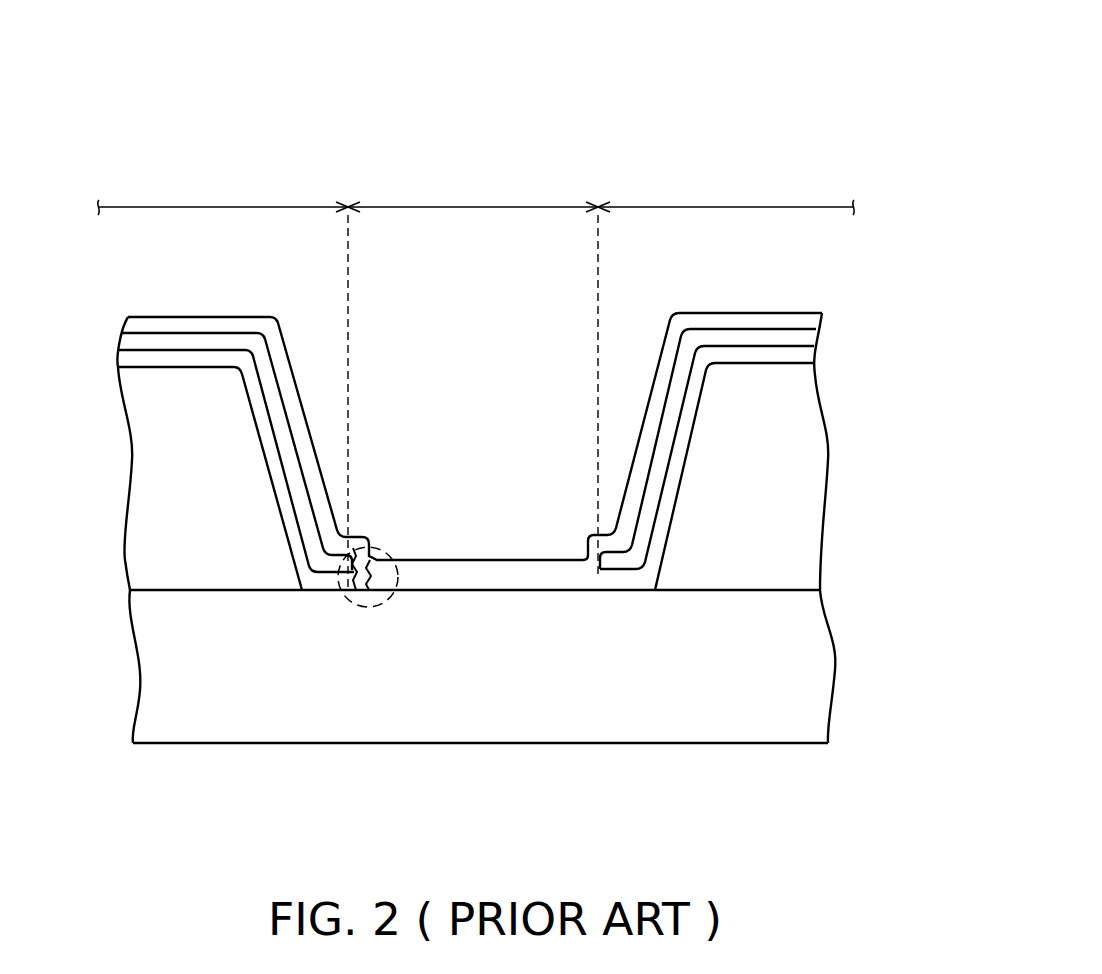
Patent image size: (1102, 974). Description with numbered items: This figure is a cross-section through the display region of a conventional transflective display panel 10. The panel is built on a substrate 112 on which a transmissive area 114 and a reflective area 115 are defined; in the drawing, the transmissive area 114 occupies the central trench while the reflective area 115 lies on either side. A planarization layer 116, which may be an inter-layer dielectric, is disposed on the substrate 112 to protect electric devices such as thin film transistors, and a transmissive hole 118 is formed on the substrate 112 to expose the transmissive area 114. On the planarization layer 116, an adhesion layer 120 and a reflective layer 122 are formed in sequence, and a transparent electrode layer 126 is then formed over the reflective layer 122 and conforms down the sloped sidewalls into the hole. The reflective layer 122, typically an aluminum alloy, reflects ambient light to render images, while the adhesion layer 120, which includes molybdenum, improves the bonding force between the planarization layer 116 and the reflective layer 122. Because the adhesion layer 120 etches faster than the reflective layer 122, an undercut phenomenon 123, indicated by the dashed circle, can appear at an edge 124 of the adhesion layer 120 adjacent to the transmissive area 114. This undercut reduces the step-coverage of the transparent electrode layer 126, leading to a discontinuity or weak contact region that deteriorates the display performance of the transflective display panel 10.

The transflective display panel 10 is at (692, 90).
The substrate 112 is at (788, 715).
The transmissive area 114 is at (473, 384).
The reflective area 115 is at (476, 197).
The planarization layer 116 is at (182, 549).
The transmissive hole 118 is at (693, 423).
The adhesion layer 120 is at (127, 363).
The reflective layer 122 is at (127, 342).
The undercut phenomenon 123 is at (368, 607).
The edge of the adhesion layer 124 is at (597, 575).
The transparent electrode layer 126 is at (142, 322).